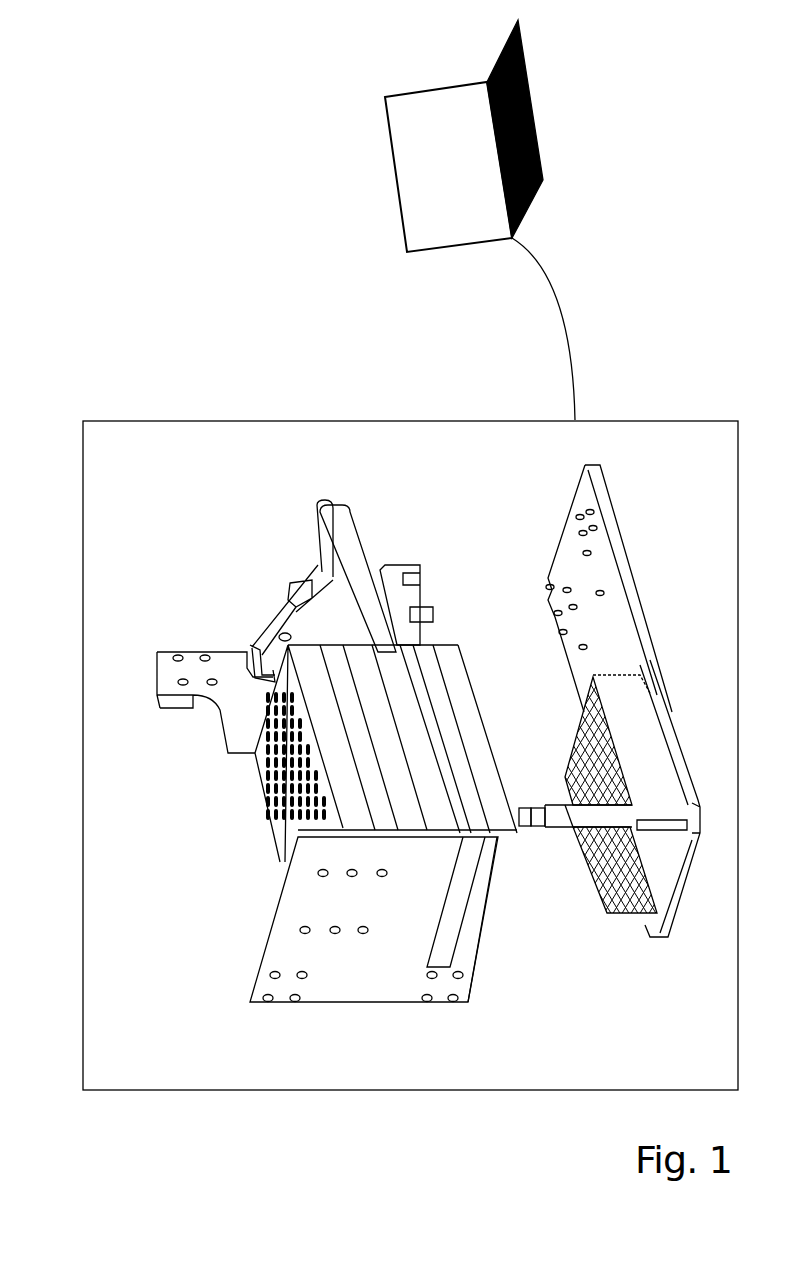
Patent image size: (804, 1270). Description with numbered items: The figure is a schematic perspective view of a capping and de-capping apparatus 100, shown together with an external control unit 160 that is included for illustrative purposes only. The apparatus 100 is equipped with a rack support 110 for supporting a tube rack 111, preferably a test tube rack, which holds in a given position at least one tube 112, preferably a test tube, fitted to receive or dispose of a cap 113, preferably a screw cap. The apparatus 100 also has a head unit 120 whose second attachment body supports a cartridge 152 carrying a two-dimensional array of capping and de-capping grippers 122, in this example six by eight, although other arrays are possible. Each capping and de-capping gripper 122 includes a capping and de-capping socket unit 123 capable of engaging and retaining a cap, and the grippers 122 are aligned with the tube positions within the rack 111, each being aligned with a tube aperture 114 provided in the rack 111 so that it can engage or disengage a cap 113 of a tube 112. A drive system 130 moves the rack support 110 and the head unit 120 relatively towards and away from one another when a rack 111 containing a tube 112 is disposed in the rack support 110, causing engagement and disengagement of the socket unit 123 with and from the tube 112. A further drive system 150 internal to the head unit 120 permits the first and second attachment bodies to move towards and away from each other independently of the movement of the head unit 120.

The capping and de-capping apparatus 100 is at (182, 823).
The rack support 110 is at (578, 573).
The tube rack 111 is at (646, 882).
The tube 112 is at (579, 825).
The cap 113 is at (548, 805).
The tube aperture 114 is at (622, 766).
The head unit 120 is at (392, 967).
The capping and de-capping gripper 122 is at (517, 805).
The capping and de-capping socket unit 123 is at (532, 805).
The drive system 130 is at (320, 562).
The drive system 150 is at (425, 593).
The cartridge 152 is at (463, 680).
The external control unit 160 is at (355, 187).